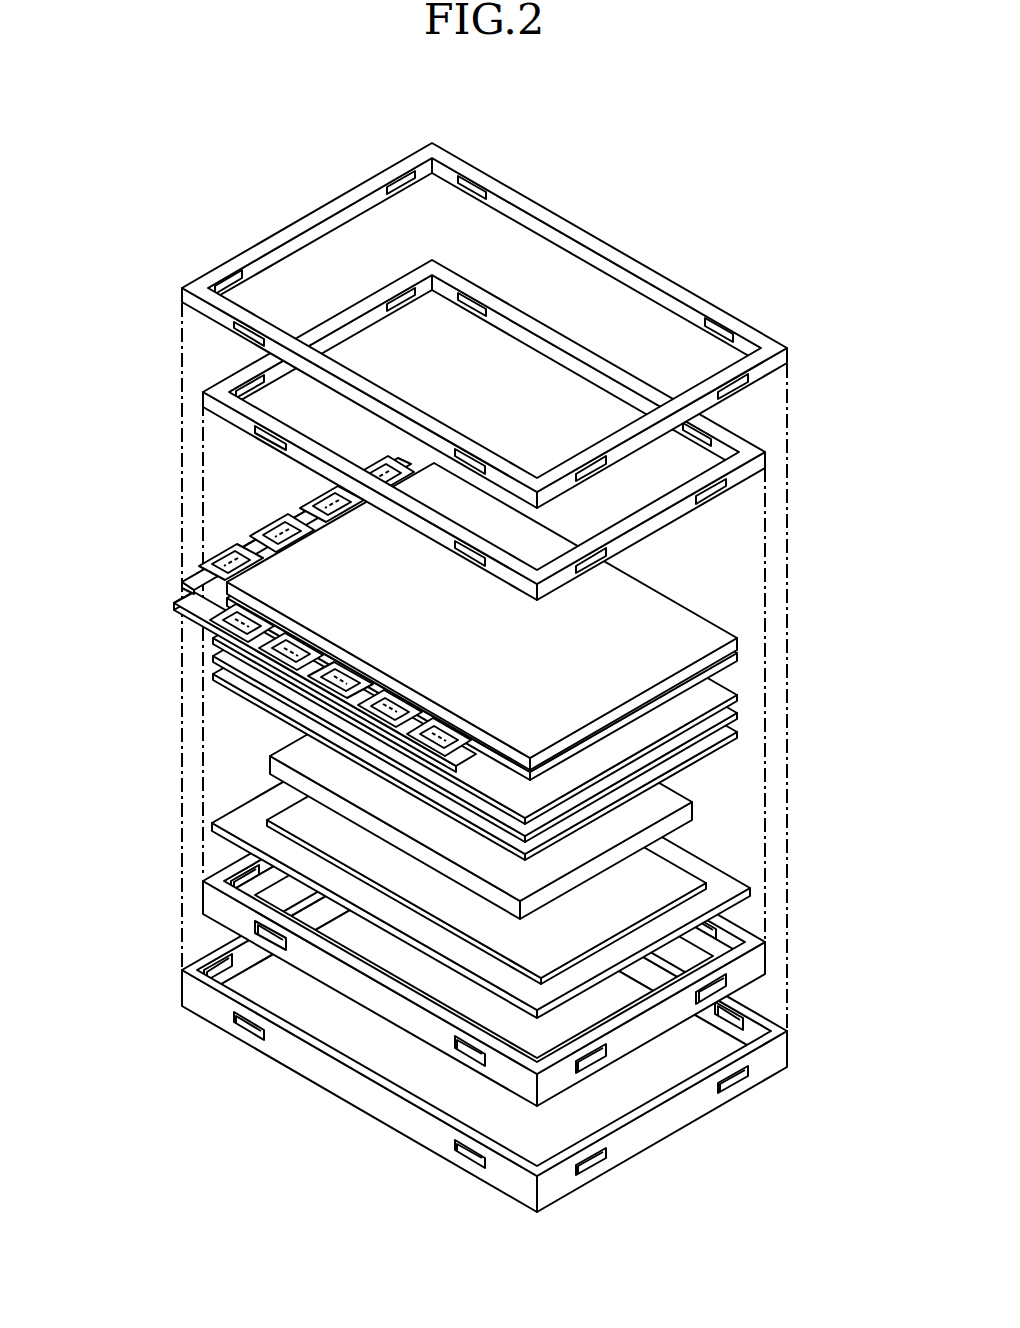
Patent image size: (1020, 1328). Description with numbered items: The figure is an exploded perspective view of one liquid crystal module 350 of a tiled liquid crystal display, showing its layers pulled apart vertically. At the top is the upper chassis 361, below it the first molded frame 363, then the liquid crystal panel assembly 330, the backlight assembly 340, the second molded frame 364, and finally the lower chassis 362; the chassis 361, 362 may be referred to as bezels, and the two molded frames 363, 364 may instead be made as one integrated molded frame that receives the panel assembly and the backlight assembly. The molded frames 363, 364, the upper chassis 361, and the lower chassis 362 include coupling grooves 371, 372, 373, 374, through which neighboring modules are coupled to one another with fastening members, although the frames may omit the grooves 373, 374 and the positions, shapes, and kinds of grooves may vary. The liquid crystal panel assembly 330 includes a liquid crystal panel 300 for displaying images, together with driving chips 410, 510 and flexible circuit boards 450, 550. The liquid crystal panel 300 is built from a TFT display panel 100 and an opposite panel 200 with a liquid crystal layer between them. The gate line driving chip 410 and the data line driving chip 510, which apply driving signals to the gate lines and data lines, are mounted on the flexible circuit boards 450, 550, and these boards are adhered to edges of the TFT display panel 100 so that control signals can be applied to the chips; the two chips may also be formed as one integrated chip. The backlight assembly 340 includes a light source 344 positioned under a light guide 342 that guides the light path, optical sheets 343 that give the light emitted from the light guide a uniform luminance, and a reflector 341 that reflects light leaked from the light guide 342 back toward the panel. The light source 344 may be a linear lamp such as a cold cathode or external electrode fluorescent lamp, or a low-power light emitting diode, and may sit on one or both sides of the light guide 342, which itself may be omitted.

The TFT display panel 100 is at (482, 629).
The opposite panel 200 is at (513, 613).
The liquid crystal panel 300 is at (482, 618).
The liquid crystal panel assembly 330 is at (690, 567).
The backlight assembly 340 is at (558, 766).
The reflector 341 is at (715, 866).
The light guide 342 is at (680, 815).
The optical sheets 343 is at (528, 687).
The light source 344 is at (670, 877).
The liquid crystal module 350 is at (483, 704).
The upper chassis 361 is at (484, 325).
The lower chassis 362 is at (484, 1019).
The molded frame 363 is at (526, 422).
The molded frame 364 is at (490, 956).
The coupling groove 371 is at (705, 315).
The coupling groove 372 is at (460, 1158).
The coupling groove 373 is at (478, 298).
The coupling groove 374 is at (462, 1047).
The gate line driving chip 410 is at (257, 537).
The flexible circuit board 450 is at (298, 515).
The data line driving chip 510 is at (213, 610).
The flexible circuit board 550 is at (215, 627).